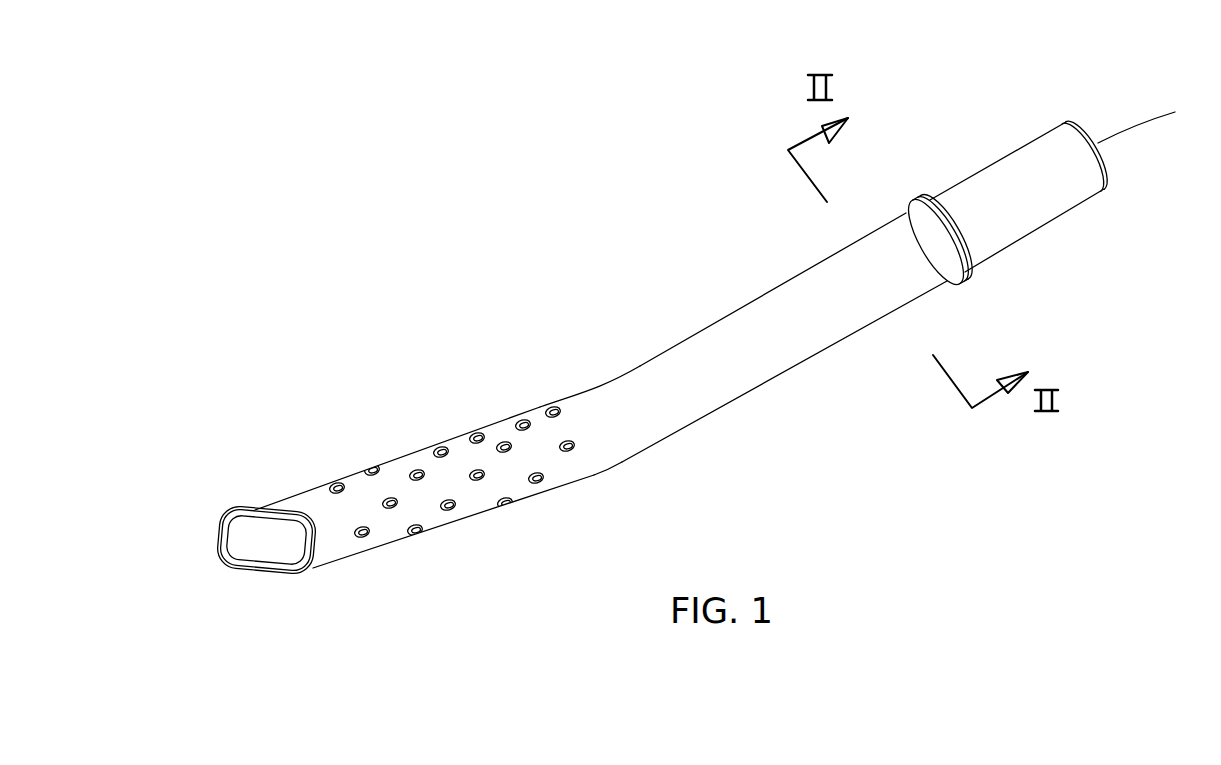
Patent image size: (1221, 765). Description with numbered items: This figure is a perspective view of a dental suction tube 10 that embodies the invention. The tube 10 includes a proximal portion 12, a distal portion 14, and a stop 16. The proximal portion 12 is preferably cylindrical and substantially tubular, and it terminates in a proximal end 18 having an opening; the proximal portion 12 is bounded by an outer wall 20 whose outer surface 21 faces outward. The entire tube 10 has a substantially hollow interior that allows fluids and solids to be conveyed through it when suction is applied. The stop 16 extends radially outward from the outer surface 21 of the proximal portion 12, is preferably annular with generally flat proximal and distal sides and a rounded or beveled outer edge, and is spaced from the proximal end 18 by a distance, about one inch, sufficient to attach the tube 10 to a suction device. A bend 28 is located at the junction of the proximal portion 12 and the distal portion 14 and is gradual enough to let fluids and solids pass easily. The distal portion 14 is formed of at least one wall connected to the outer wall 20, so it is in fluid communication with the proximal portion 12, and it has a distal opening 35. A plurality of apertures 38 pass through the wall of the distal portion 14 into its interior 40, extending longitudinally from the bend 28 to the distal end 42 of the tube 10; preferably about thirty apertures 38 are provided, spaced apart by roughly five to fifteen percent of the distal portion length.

The dental suction tube 10 is at (563, 275).
The proximal portion 12 is at (1017, 223).
The distal portion 14 is at (385, 530).
The stop 16 is at (920, 198).
The proximal end 18 is at (1152, 119).
The outer wall 20 is at (883, 285).
The outer surface 21 is at (772, 315).
The bend 28 is at (610, 468).
The distal opening 35 is at (265, 543).
The apertures 38 is at (545, 481).
The interior 40 is at (252, 542).
The distal end 42 is at (317, 585).